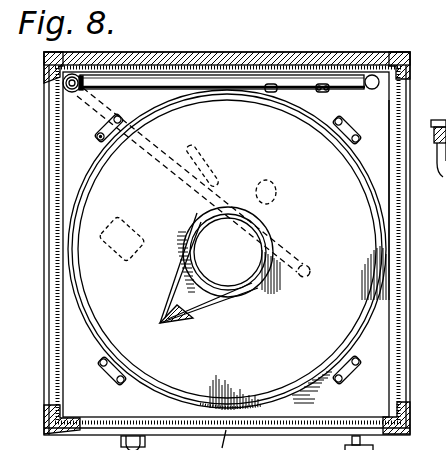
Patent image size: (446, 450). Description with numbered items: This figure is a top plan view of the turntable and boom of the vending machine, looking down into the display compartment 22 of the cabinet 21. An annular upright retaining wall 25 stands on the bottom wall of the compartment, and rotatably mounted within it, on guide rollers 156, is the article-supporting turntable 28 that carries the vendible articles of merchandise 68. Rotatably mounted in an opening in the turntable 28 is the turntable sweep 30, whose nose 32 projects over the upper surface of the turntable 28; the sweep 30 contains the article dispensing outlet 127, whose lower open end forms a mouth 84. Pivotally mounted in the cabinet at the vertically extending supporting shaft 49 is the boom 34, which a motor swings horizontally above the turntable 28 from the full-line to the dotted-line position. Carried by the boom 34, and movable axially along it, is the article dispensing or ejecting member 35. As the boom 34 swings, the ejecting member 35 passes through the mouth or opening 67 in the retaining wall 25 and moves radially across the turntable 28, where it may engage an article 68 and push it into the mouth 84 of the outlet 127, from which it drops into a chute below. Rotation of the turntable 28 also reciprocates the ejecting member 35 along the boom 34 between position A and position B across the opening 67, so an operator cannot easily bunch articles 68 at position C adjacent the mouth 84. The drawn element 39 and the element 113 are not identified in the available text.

The cabinet 21 is at (378, 122).
The display compartment 22 is at (385, 134).
The annular upright retaining wall 25 is at (389, 242).
The article-supporting turntable 28 is at (343, 333).
The turntable sweep 30 is at (258, 292).
The nose 32 is at (190, 318).
The boom 34 is at (170, 87).
The article dispensing or ejecting member 35 is at (272, 84).
The support 39 is at (445, 175).
The vertically extending supporting shaft 49 is at (73, 93).
The mouth or opening 67 is at (308, 116).
The article of merchandise 68 is at (234, 144).
The mouth 84 is at (262, 233).
The base 113 is at (283, 440).
The article dispensing outlet 127 is at (225, 280).
The guide rollers 156 is at (108, 380).
The position A is at (270, 84).
The position B is at (323, 83).
The position C is at (275, 166).